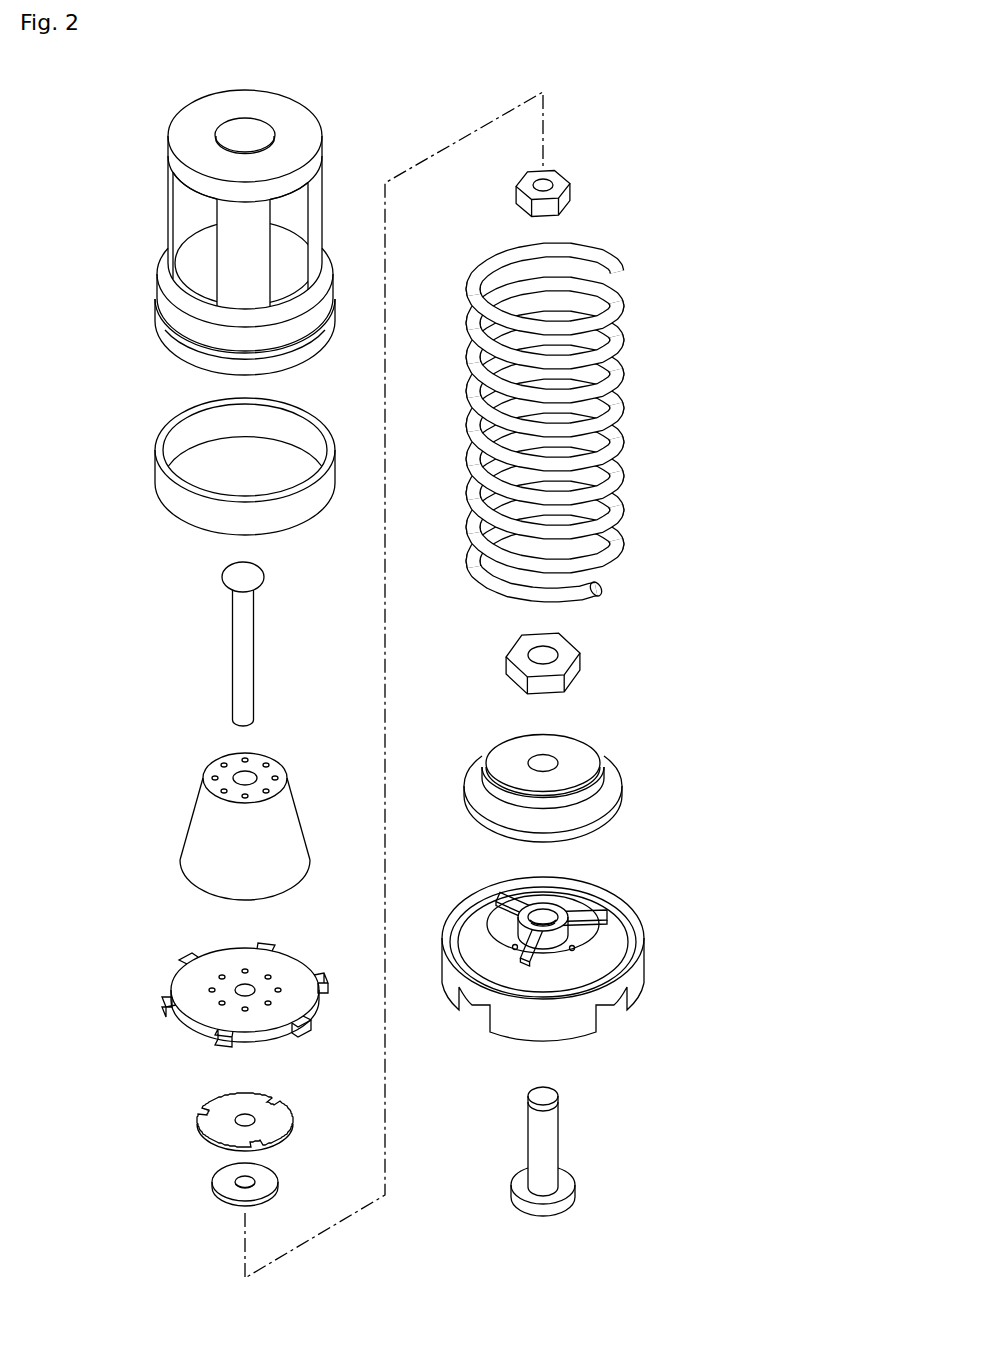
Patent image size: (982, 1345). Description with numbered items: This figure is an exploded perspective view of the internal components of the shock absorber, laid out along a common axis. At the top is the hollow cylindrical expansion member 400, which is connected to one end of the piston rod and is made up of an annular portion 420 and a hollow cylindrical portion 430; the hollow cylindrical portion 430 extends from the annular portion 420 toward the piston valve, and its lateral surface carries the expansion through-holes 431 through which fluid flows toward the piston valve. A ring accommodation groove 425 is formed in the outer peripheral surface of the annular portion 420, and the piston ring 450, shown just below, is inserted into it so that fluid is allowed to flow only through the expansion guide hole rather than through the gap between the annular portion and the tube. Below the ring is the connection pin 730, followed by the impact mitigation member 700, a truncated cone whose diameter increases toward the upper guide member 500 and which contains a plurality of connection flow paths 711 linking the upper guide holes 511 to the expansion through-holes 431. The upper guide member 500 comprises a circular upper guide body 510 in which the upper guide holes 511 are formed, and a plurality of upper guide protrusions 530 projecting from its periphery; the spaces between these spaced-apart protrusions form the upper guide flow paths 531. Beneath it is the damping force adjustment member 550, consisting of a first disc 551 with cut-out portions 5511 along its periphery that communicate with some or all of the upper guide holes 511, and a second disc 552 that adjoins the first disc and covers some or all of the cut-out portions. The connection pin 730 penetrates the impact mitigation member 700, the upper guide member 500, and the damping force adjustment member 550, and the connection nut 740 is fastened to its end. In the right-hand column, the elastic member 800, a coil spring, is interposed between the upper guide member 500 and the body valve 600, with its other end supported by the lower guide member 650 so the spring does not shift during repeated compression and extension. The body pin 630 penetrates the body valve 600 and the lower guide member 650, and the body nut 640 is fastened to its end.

The hollow cylindrical expansion member 400 is at (199, 242).
The hollow cylindrical portion 430 is at (176, 163).
The expansion through-holes 431 is at (199, 203).
The ring accommodation groove 425 is at (182, 340).
The annular portion 420 is at (180, 365).
The piston ring 450 is at (150, 479).
The connection pin 730 is at (215, 576).
The impact mitigation member 700 is at (207, 812).
The connection flow paths 711 is at (214, 775).
The upper guide member 500 is at (204, 978).
The upper guide body 510 is at (187, 1025).
The upper guide holes 511 is at (220, 977).
The upper guide protrusions 530 is at (321, 973).
The upper guide flow paths 531 is at (168, 978).
The damping force adjustment member 550 is at (174, 1149).
The first disc 551 is at (196, 1131).
The cut-out portions 5511 is at (203, 1112).
The second disc 552 is at (227, 1186).
The connection nut 740 is at (585, 191).
The elastic member 800 is at (630, 511).
The body nut 640 is at (600, 661).
The lower guide member 650 is at (640, 777).
The body valve 600 is at (665, 969).
The body pin 630 is at (578, 1138).